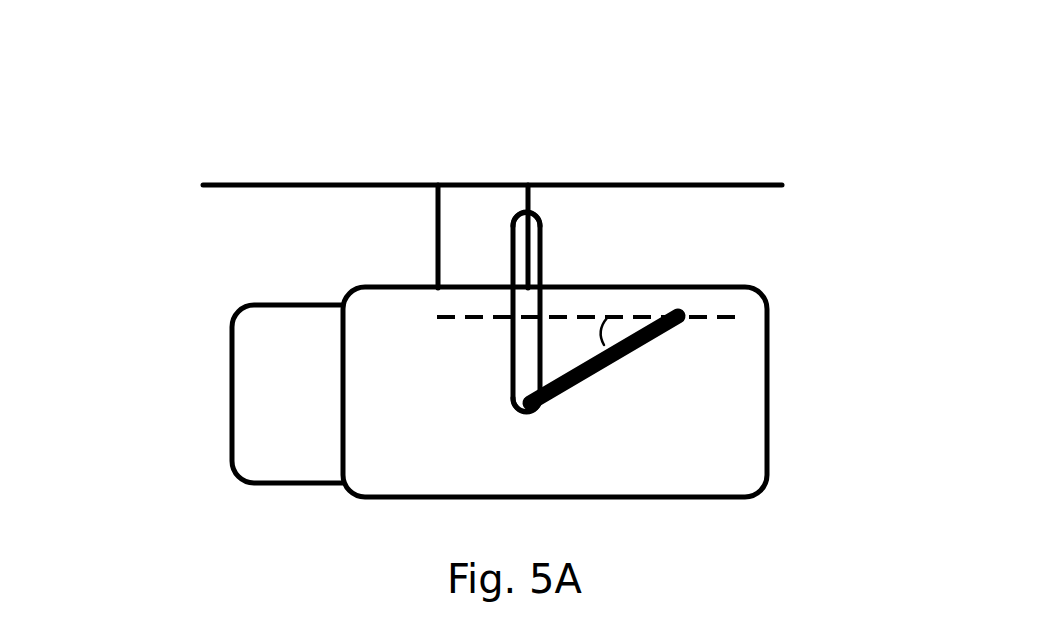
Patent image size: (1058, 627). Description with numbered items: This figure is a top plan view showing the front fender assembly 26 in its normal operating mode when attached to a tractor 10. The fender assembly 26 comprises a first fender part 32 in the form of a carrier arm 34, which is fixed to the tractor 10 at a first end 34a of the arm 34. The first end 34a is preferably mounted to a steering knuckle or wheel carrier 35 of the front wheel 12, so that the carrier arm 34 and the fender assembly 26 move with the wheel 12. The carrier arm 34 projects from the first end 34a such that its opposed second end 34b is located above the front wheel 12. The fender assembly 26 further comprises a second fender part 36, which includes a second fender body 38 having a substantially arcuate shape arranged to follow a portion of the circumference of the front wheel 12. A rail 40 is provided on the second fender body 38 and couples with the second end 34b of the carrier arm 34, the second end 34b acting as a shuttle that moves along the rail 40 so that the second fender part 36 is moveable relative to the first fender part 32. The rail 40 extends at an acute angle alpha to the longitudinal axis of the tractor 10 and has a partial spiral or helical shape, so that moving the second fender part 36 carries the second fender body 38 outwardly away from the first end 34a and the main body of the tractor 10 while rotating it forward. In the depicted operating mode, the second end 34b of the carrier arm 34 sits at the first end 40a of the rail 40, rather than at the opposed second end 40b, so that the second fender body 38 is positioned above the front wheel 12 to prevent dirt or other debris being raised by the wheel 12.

The tractor 10 is at (538, 111).
The front wheel 12 is at (282, 410).
The front fender assembly 26 is at (193, 363).
The first fender part 32 is at (633, 172).
The carrier arm 34 is at (548, 238).
The first end of the carrier arm 34a is at (552, 213).
The second end of the carrier arm 34b is at (497, 392).
The steering knuckle or wheel carrier 35 is at (470, 208).
The second fender part 36 is at (626, 336).
The second fender body 38 is at (653, 465).
The rail 40 is at (612, 440).
The first end of the rail 40a is at (497, 420).
The second end of the rail 40b is at (707, 305).